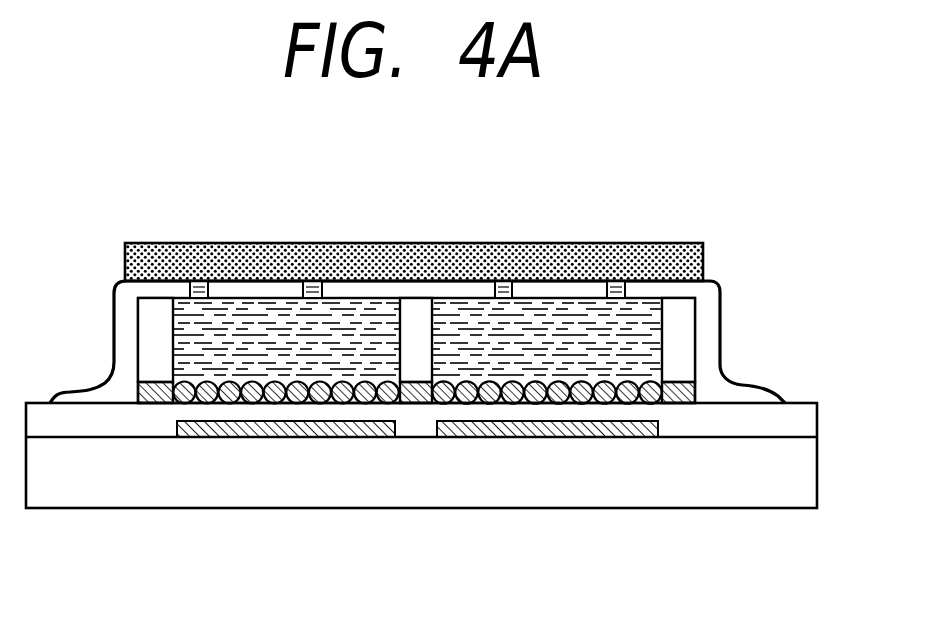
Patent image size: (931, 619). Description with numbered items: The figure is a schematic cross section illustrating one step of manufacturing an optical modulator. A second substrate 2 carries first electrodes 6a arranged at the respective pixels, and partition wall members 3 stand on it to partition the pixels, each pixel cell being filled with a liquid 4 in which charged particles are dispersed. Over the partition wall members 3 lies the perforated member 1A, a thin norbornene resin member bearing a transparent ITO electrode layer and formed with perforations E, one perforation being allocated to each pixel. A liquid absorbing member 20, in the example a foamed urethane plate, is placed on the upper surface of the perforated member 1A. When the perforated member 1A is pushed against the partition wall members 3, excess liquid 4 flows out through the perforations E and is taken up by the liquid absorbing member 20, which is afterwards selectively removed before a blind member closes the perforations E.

The liquid absorbing member 20 is at (185, 260).
The liquid 4 is at (363, 320).
The perforations E is at (506, 282).
The partition wall members 3 is at (685, 313).
The perforated member 1A is at (708, 350).
The second substrate 2 is at (798, 470).
The first electrodes 6a is at (547, 437).